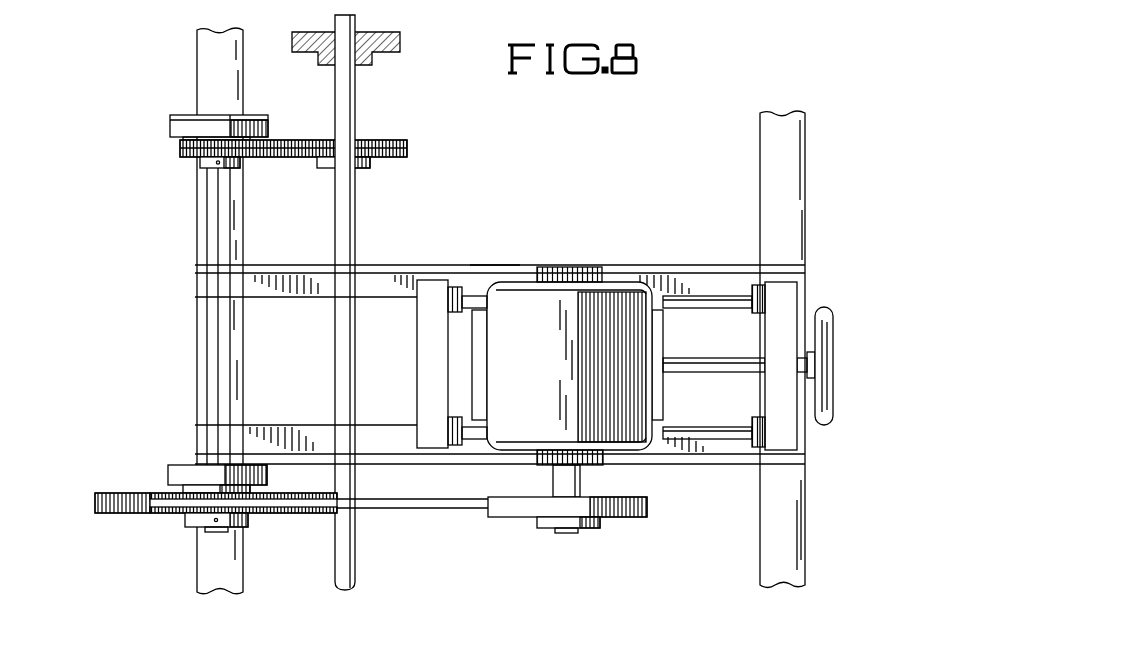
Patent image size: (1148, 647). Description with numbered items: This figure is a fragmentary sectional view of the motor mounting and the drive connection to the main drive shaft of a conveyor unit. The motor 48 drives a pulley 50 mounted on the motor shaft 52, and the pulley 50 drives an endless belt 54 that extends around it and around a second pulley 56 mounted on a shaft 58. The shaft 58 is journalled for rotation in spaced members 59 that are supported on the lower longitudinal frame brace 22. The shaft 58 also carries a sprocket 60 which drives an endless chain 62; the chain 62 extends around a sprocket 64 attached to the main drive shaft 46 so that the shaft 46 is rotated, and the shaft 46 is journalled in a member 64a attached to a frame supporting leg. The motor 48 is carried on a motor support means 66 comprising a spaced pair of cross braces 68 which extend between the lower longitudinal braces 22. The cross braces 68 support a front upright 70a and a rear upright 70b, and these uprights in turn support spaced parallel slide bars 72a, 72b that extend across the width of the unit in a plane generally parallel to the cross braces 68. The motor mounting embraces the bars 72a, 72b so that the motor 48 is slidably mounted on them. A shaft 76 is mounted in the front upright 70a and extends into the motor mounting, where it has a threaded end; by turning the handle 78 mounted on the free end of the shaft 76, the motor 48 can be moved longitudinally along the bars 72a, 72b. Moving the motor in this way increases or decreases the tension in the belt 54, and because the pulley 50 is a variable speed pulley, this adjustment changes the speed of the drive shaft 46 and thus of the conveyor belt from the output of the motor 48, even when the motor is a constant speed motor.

The lower longitudinally extending brace 22 is at (197, 66).
The main drive shaft 46 is at (356, 105).
The motor 48 is at (567, 366).
The pulley 50 is at (625, 518).
The motor shaft 52 is at (580, 479).
The endless belt 54 is at (460, 510).
The pulley 56 is at (298, 514).
The shaft 58 is at (229, 382).
The spaced members 59 is at (246, 120).
The sprocket 60 is at (186, 162).
The endless chain 62 is at (300, 157).
The sprocket 64 is at (372, 163).
The member 64a is at (400, 40).
The motor support means 66 is at (495, 256).
The cross braces 68 is at (393, 297).
The front upright 70a is at (790, 420).
The rear upright 70b is at (417, 362).
The slide bar 72a is at (707, 428).
The slide bar 72b is at (697, 305).
The shaft 76 is at (688, 372).
The handle 78 is at (833, 342).